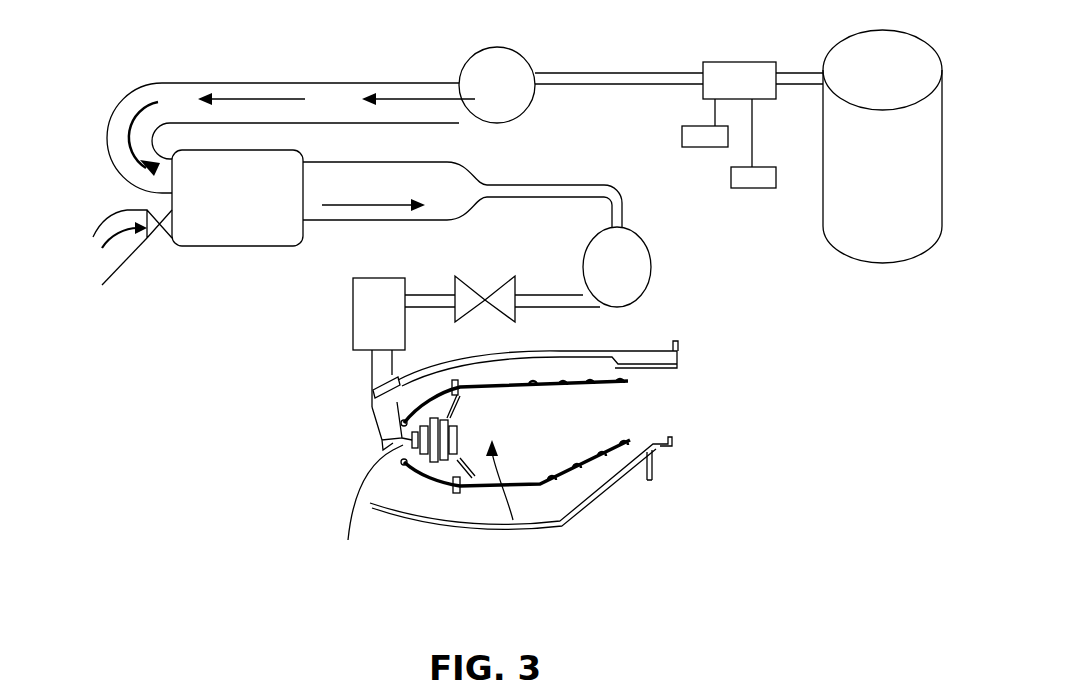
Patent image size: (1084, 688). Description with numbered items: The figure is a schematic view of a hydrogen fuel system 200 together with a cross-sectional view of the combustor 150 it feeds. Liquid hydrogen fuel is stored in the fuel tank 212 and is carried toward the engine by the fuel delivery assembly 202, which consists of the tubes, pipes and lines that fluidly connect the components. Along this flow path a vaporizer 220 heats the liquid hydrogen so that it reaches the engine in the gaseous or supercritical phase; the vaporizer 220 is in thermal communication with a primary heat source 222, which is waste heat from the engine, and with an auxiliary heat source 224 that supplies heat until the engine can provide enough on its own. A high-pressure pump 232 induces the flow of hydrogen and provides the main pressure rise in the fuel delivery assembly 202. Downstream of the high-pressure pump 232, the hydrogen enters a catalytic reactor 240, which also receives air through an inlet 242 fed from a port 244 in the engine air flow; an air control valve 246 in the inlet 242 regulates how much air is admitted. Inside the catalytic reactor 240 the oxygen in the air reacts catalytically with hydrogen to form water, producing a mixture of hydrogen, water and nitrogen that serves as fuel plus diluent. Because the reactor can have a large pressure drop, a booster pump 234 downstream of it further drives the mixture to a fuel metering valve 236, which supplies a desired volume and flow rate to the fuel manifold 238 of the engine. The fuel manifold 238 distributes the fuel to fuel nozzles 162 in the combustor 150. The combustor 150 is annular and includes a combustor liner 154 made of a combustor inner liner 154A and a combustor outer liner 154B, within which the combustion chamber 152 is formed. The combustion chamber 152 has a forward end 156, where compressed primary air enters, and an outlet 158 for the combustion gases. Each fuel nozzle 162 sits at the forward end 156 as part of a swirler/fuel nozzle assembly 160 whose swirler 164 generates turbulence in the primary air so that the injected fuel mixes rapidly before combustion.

The fuel system 200 is at (172, 50).
The fuel delivery assembly 202 is at (590, 75).
The fuel tank 212 is at (884, 262).
The vaporizer 220 is at (728, 75).
The primary heat source 222 is at (710, 145).
The auxiliary heat source 224 is at (752, 183).
The high-pressure pump 232 is at (490, 65).
The booster pump 234 is at (648, 265).
The fuel metering valve 236 is at (503, 302).
The fuel manifold 238 is at (353, 307).
The catalytic reactor 240 is at (263, 245).
The inlet 242 is at (100, 284).
The port 244 is at (91, 236).
The air control valve 246 is at (170, 240).
The combustor 150 is at (661, 526).
The combustion chamber 152 is at (550, 446).
The combustor liner 154 is at (548, 485).
The combustor inner liner 154A is at (493, 487).
The combustor outer liner 154B is at (600, 378).
The forward end 156 is at (515, 530).
The outlet 158 is at (653, 405).
The swirler/fuel nozzle assembly 160 is at (394, 490).
The fuel nozzle 162 is at (390, 460).
The swirler 164 is at (430, 463).